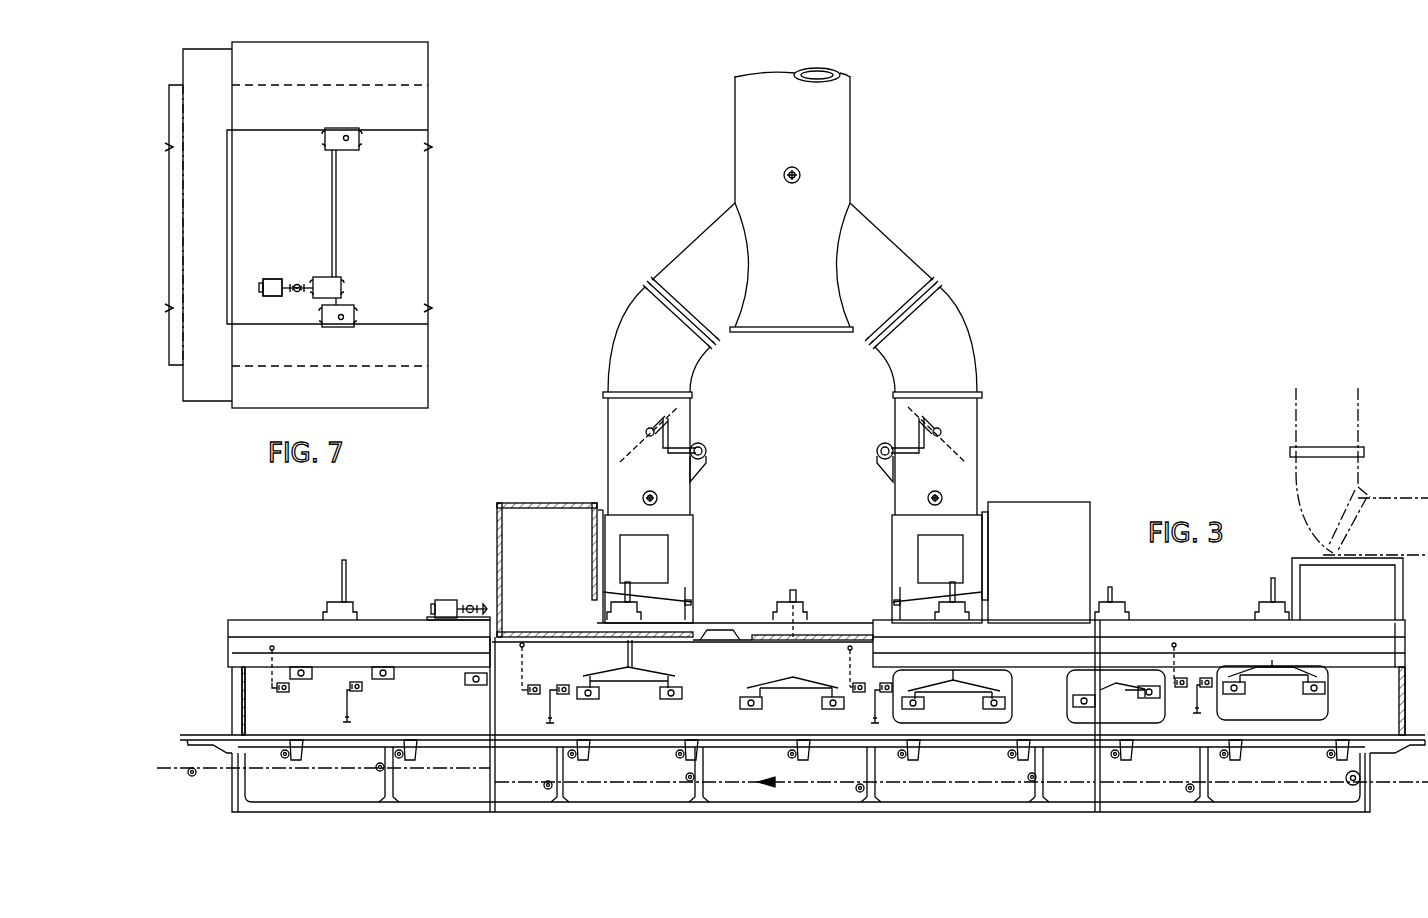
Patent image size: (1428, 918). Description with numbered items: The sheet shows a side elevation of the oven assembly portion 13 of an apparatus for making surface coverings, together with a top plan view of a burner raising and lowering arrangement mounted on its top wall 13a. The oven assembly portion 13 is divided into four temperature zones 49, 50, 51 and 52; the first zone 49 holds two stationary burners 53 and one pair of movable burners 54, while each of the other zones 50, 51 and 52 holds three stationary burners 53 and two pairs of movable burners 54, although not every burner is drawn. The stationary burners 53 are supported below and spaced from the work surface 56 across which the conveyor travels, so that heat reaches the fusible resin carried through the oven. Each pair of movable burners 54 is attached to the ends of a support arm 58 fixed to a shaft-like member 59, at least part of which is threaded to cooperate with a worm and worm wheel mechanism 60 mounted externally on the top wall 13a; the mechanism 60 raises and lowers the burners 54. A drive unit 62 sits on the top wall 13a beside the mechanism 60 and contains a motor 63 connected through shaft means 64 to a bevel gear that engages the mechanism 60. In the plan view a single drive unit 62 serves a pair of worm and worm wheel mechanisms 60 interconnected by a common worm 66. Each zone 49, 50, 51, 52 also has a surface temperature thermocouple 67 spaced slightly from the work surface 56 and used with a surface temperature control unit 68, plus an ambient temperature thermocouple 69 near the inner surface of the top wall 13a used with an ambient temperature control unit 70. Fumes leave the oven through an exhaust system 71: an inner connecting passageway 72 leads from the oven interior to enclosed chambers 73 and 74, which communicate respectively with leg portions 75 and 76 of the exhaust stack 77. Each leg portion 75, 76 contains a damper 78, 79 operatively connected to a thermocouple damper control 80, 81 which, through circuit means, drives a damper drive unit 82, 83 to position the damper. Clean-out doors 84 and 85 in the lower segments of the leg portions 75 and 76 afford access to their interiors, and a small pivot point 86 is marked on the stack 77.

In FIG. 3, the oven assembly portion 13 is at (808, 814).
In FIG. 7, the top wall 13a is at (402, 243).
In FIG. 3, the top wall 13a is at (250, 619).
In FIG. 3, the temperature zone 49 is at (330, 715).
In FIG. 3, the temperature zone 50 is at (637, 728).
In FIG. 3, the temperature zone 51 is at (863, 730).
In FIG. 3, the temperature zone 52 is at (1190, 720).
In FIG. 3, the stationary burner 53 is at (283, 752).
In FIG. 3, the movable burner 54 is at (374, 667).
In FIG. 3, the work surface 56 is at (448, 733).
In FIG. 3, the support arm 58 is at (668, 676).
In FIG. 3, the shaft-like member 59 is at (348, 565).
In FIG. 7, the worm and worm wheel mechanism 60 is at (337, 126).
In FIG. 3, the worm and worm wheel mechanism 60 is at (323, 603).
In FIG. 7, the drive unit 62 is at (274, 297).
In FIG. 3, the drive unit 62 is at (445, 598).
In FIG. 7, the motor 63 is at (270, 278).
In FIG. 7, the shaft means 64 is at (299, 276).
In FIG. 7, the common worm 66 is at (337, 198).
In FIG. 3, the surface temperature thermocouple 67 is at (353, 722).
In FIG. 3, the surface temperature control unit 68 is at (364, 688).
In FIG. 3, the ambient temperature thermocouple 69 is at (268, 648).
In FIG. 3, the ambient temperature control unit 70 is at (281, 694).
In FIG. 3, the exhaust system 71 is at (792, 233).
In FIG. 3, the inner connecting passageway 72 is at (567, 632).
In FIG. 3, the enclosed chamber 73 is at (549, 572).
In FIG. 3, the enclosed chamber 74 is at (1043, 565).
In FIG. 3, the leg portion 75 is at (692, 500).
In FIG. 3, the leg portion 76 is at (893, 500).
In FIG. 3, the exhaust stack 77 is at (802, 253).
In FIG. 3, the damper 78 is at (628, 446).
In FIG. 3, the damper 79 is at (960, 446).
In FIG. 3, the thermocouple damper control 80 is at (643, 494).
In FIG. 3, the thermocouple damper control 81 is at (942, 494).
In FIG. 3, the damper drive unit 82 is at (706, 440).
In FIG. 3, the damper drive unit 83 is at (882, 439).
In FIG. 3, the clean-out door 84 is at (655, 569).
In FIG. 3, the clean-out door 85 is at (951, 569).
In FIG. 3, the pivot 86 is at (799, 171).